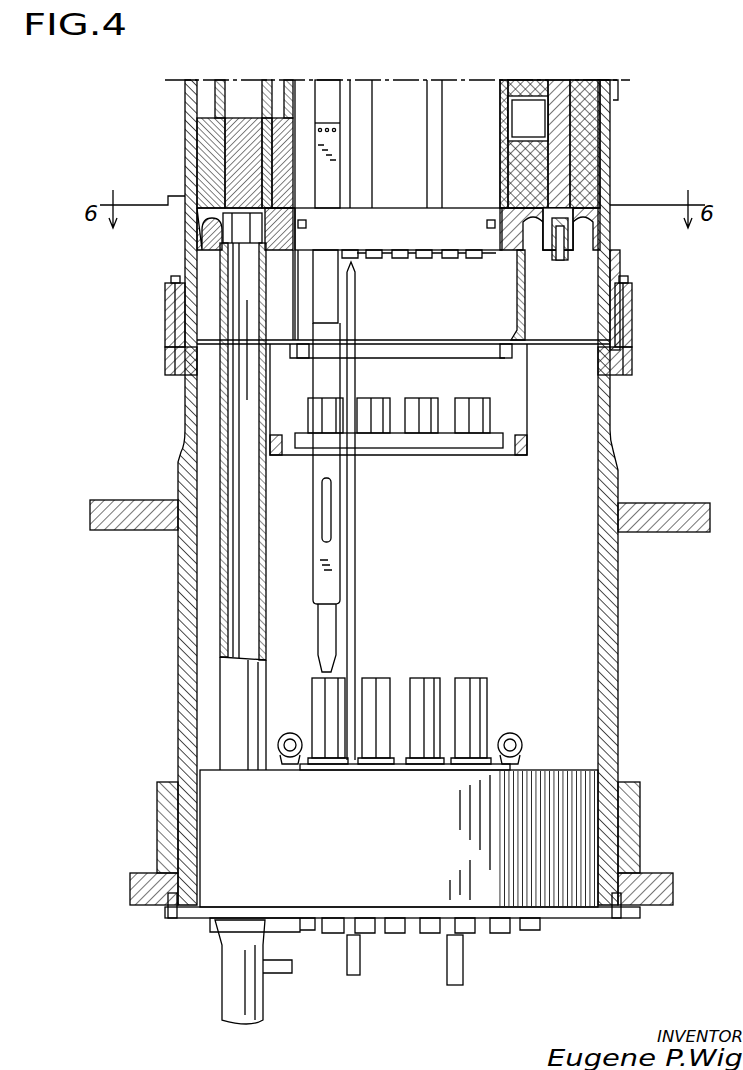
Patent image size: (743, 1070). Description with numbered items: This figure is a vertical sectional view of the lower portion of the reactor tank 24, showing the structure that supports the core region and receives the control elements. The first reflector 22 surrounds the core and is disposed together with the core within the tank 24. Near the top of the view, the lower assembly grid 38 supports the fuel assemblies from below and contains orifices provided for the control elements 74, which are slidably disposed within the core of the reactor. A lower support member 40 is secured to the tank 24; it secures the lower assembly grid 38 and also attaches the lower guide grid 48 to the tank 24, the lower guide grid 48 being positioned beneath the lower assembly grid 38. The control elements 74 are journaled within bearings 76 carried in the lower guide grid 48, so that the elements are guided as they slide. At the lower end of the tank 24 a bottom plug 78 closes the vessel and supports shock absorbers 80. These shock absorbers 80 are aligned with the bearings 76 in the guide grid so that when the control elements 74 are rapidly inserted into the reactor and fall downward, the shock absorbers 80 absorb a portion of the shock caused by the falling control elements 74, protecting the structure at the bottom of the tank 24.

The first reflector 22 is at (580, 100).
The tank 24 is at (607, 645).
The lower assembly grid 38 is at (446, 226).
The lower support member 40 is at (525, 300).
The lower guide grid 48 is at (452, 442).
The control element 74 is at (327, 92).
The bearing 76 is at (393, 400).
The bottom plug 78 is at (420, 856).
The shock absorber 80 is at (465, 680).